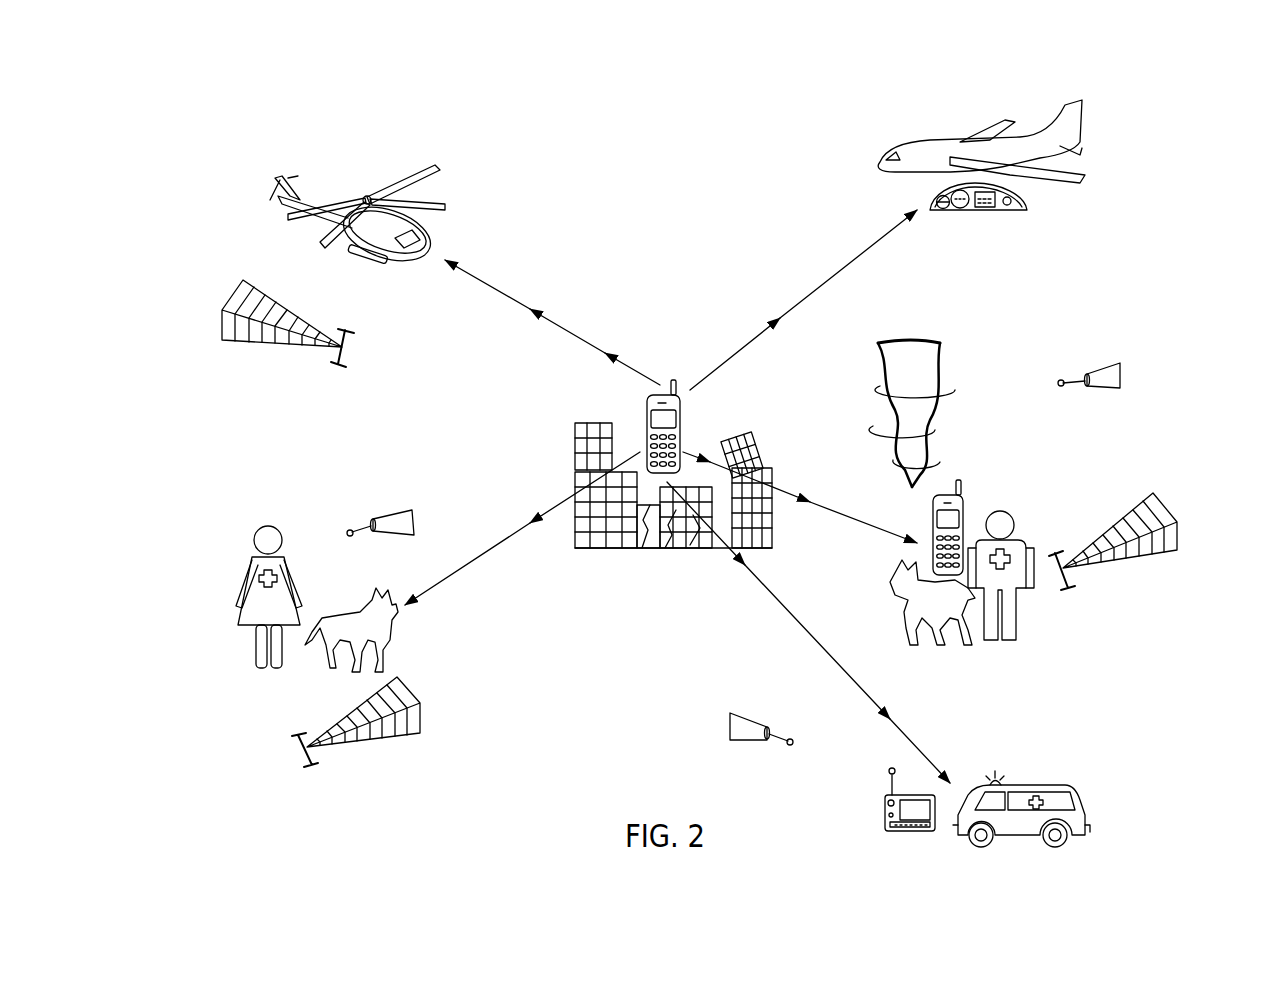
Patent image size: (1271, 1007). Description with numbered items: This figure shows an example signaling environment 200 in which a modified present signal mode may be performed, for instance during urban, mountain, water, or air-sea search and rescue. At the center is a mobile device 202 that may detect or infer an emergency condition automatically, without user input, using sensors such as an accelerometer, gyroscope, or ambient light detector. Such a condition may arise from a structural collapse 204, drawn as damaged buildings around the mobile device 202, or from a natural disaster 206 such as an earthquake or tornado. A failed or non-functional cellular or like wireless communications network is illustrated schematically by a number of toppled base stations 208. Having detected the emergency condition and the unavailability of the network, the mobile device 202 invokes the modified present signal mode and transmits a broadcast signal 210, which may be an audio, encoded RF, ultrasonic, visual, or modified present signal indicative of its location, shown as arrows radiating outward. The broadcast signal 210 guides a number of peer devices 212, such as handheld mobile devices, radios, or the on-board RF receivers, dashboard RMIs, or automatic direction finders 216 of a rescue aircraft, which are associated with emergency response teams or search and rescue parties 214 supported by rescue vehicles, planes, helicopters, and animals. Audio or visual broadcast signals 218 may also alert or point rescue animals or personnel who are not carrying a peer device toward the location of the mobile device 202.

The signaling environment 200 is at (1178, 125).
The mobile device 202 is at (683, 410).
The structural collapse 204 is at (555, 440).
The natural disaster 206 is at (965, 390).
The toppled base stations 208 is at (1125, 365).
The broadcast signal 210 is at (485, 278).
The peer devices 212 is at (1026, 205).
The emergency response teams or search and rescue parties 214 is at (318, 168).
The on-board aircraft receivers 216 is at (965, 225).
The audio or visual broadcast signals 218 is at (580, 332).